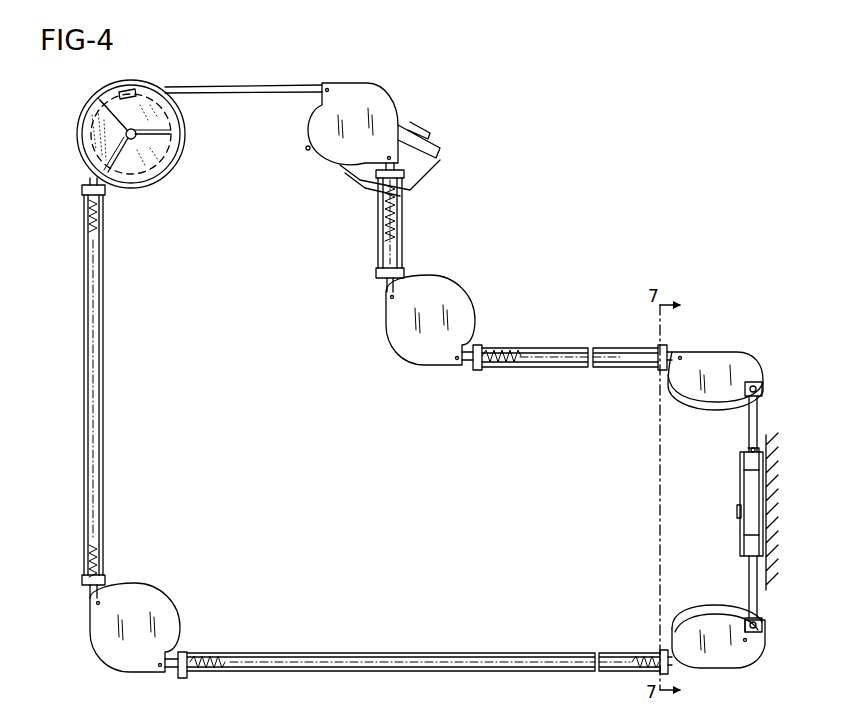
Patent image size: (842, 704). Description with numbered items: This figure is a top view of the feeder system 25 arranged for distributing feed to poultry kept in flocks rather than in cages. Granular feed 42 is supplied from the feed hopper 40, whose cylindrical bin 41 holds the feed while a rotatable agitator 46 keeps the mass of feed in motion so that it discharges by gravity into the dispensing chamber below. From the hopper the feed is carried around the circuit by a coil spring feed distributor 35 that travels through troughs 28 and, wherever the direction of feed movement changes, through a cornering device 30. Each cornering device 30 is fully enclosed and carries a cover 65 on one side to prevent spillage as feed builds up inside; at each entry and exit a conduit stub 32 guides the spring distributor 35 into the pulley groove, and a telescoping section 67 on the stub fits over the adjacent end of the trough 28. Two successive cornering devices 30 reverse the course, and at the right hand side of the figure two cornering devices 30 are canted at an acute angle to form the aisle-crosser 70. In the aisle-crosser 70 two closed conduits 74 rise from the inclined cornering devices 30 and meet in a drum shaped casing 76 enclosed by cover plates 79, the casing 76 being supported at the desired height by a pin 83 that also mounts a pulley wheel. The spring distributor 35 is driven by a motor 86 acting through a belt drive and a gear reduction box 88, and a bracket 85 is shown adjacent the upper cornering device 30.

The feeder system 25 is at (205, 75).
The trough 28 is at (378, 242).
The cornering device 30 is at (160, 172).
The conduit stub 32 is at (404, 168).
The coil spring feed distributor 35 is at (398, 255).
The feed hopper 40 is at (80, 95).
The cylindrical bin 41 is at (182, 146).
The feed 42 is at (90, 128).
The rotatable agitator 46 is at (176, 128).
The cover 65 is at (375, 108).
The telescoping section 67 is at (405, 180).
The aisle-crosser 70 is at (722, 505).
The closed conduit 74 is at (758, 405).
The drum shaped casing 76 is at (745, 470).
The cover plate 79 is at (745, 535).
The pin 83 is at (737, 508).
The bracket 85 is at (410, 118).
The motor 86 is at (425, 152).
The gear reduction box 88 is at (306, 152).